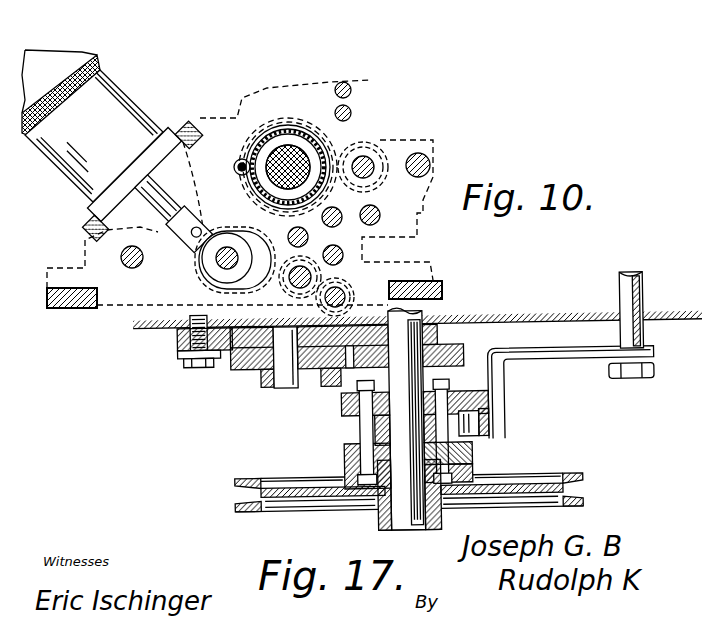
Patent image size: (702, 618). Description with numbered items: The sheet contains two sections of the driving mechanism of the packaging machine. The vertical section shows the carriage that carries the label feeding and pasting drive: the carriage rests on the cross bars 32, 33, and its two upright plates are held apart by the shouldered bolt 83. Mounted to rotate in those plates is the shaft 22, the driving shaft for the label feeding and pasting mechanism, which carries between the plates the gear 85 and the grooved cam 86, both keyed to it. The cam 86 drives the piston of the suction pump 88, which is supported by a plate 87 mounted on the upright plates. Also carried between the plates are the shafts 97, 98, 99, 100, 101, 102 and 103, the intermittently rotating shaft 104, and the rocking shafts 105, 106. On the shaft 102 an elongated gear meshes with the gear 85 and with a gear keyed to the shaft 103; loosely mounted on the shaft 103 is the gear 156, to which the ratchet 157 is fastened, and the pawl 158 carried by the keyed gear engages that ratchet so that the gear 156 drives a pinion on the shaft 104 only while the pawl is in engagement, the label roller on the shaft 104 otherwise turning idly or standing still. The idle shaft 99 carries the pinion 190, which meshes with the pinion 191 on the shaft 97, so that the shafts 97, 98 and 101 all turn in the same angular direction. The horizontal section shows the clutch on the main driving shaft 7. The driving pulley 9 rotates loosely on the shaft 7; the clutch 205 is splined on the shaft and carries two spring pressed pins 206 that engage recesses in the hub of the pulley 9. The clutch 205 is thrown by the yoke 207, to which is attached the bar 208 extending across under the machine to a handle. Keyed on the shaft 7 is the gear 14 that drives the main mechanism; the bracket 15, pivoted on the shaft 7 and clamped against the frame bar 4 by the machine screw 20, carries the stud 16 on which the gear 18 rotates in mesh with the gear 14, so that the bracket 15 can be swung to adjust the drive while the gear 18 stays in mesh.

In FIG. 10, the suction pump 88 is at (107, 112).
In FIG. 10, the plate 87 is at (184, 128).
In FIG. 10, the pawl 158 is at (238, 160).
In FIG. 10, the gear 156 is at (263, 117).
In FIG. 10, the ratchet 157 is at (298, 132).
In FIG. 10, the shaft 105 is at (348, 85).
In FIG. 10, the shaft 106 is at (352, 108).
In FIG. 10, the shaft 103 is at (297, 158).
In FIG. 10, the shaft 104 is at (373, 162).
In FIG. 10, the gear 85 is at (428, 160).
In FIG. 10, the shaft 102 is at (288, 232).
In FIG. 10, the shaft 101 is at (342, 213).
In FIG. 10, the shaft 100 is at (380, 214).
In FIG. 10, the pinion 190 is at (312, 262).
In FIG. 10, the shaft 98 is at (344, 255).
In FIG. 10, the pinion 191 is at (358, 272).
In FIG. 10, the shaft 97 is at (350, 293).
In FIG. 10, the cross bar 32 is at (437, 282).
In FIG. 10, the shouldered bolt 83 is at (143, 257).
In FIG. 10, the shaft 22 is at (217, 260).
In FIG. 10, the cam 86 is at (223, 277).
In FIG. 10, the shaft 99 is at (235, 264).
In FIG. 10, the cross bar 33 is at (82, 300).
In FIG. 17, the gear 14 is at (462, 340).
In FIG. 17, the bar 4 is at (573, 318).
In FIG. 17, the bar 208 is at (643, 339).
In FIG. 17, the yoke 207 is at (480, 428).
In FIG. 17, the clutch 205 is at (470, 452).
In FIG. 17, the spring pressed pins 206 is at (342, 454).
In FIG. 17, the driving pulley 9 is at (573, 478).
In FIG. 17, the main driving shaft 7 is at (405, 525).
In FIG. 17, the machine screw 20 is at (202, 357).
In FIG. 17, the bracket 15 is at (228, 347).
In FIG. 17, the gear 18 is at (250, 367).
In FIG. 17, the stud 16 is at (293, 375).